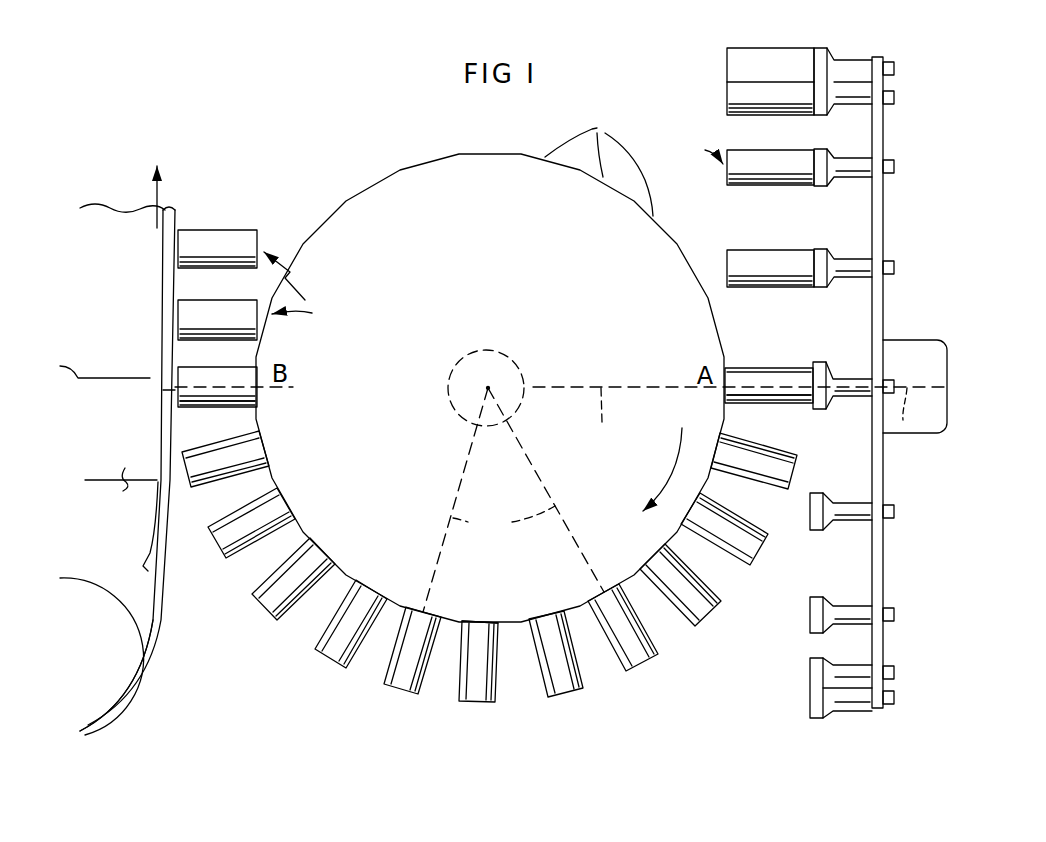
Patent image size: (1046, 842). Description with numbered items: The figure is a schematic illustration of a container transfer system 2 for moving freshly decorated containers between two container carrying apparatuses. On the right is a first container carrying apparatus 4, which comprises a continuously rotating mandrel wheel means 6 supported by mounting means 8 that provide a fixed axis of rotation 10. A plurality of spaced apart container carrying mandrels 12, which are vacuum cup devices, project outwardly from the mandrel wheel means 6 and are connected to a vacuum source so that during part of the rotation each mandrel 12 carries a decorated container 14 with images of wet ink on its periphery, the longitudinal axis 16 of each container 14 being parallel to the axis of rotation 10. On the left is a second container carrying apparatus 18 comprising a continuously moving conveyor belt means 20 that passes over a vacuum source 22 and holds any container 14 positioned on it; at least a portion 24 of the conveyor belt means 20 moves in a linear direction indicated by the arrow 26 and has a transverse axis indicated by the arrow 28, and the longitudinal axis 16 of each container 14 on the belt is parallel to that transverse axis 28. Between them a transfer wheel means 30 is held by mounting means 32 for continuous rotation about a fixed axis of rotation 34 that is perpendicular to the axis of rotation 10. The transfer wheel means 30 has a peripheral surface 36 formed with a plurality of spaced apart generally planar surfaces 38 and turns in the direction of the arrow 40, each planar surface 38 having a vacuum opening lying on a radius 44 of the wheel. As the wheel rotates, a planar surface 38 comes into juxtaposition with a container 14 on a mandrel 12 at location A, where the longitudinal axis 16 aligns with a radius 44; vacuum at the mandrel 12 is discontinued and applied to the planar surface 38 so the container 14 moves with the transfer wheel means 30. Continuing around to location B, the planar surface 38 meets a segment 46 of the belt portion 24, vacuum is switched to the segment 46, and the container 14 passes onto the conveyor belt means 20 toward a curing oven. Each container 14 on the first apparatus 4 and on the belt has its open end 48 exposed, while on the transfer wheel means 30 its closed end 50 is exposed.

The container transfer system 2 is at (411, 717).
The first container carrying apparatus 4 is at (842, 405).
The mandrel wheel means 6 is at (883, 557).
The mounting means 8 is at (900, 433).
The fixed axis of rotation 10 is at (921, 431).
The container carrying mandrel 12 is at (856, 96).
The decorated container 14 is at (760, 94).
The longitudinal axis 16 is at (258, 400).
The second container carrying apparatus 18 is at (167, 679).
The conveyor belt means 20 is at (160, 617).
The vacuum source 22 is at (121, 519).
The portion of the conveyor belt means 24 is at (163, 354).
The arrow 26 is at (155, 222).
The transverse axis 28 is at (89, 357).
The transfer wheel means 30 is at (490, 324).
The mounting means 32 is at (507, 357).
The fixed axis of rotation 34 is at (488, 388).
The peripheral surface 36 is at (356, 197).
The planar surface 38 is at (599, 155).
The arrow 40 is at (668, 463).
The radius 44 is at (529, 500).
The segment 46 is at (168, 395).
The open end 48 is at (493, 222).
The closed end 50 is at (567, 693).